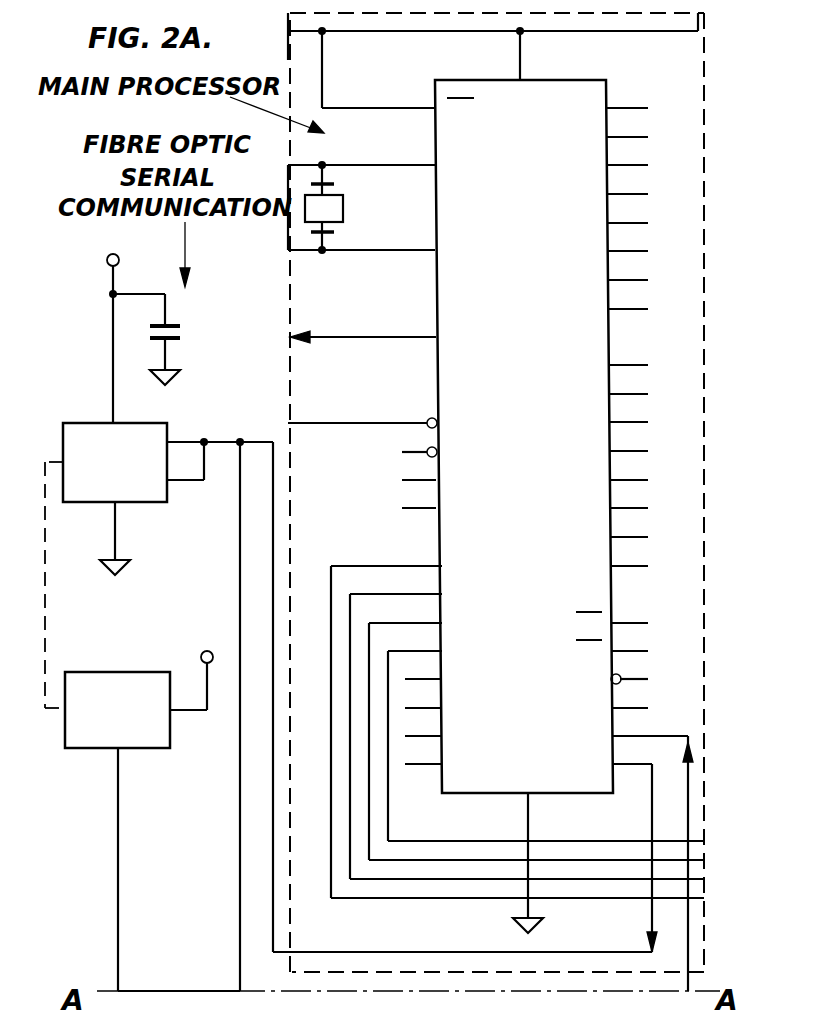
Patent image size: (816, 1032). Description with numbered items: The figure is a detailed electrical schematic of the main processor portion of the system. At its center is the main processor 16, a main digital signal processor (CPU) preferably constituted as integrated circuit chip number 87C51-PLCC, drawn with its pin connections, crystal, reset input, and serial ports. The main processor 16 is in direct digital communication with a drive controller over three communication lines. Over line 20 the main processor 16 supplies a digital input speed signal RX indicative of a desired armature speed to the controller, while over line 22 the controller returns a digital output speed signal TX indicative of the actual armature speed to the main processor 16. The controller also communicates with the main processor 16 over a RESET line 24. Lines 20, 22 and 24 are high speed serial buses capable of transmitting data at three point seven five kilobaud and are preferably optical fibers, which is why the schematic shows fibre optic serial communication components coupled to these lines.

The main processor 16 is at (303, 54).
The line 20 is at (258, 441).
The line 22 is at (688, 913).
The RESET line 24 is at (347, 308).